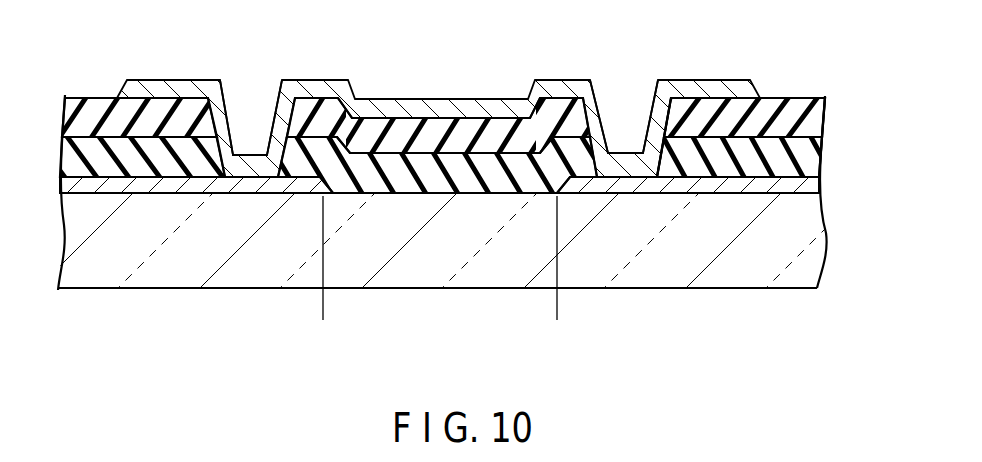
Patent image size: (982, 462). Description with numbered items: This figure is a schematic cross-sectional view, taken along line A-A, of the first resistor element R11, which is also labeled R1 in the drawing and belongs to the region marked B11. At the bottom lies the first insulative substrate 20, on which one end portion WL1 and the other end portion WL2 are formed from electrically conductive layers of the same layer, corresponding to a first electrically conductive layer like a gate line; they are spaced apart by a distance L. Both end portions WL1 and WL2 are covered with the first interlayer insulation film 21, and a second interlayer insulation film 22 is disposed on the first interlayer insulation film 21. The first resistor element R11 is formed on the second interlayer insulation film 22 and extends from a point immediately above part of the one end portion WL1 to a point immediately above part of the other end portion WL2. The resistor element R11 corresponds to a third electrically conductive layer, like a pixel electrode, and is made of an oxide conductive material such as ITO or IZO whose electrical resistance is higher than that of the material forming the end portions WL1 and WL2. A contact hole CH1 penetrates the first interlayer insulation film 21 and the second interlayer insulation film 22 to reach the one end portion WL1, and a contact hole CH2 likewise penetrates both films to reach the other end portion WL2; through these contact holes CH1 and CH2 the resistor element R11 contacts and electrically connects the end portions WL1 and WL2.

The first insulative substrate 20 is at (812, 237).
The first interlayer insulation film 21 is at (807, 151).
The second interlayer insulation film 22 is at (807, 111).
The block B11 is at (785, 74).
The contact hole CH1 is at (228, 128).
The contact hole CH2 is at (606, 127).
The first resistor element R11 is at (440, 97).
The resistor R1 is at (426, 125).
The one end portion WL1 is at (192, 194).
The other end portion WL2 is at (688, 194).
The distance L is at (543, 310).
The line A- A is at (438, 307).